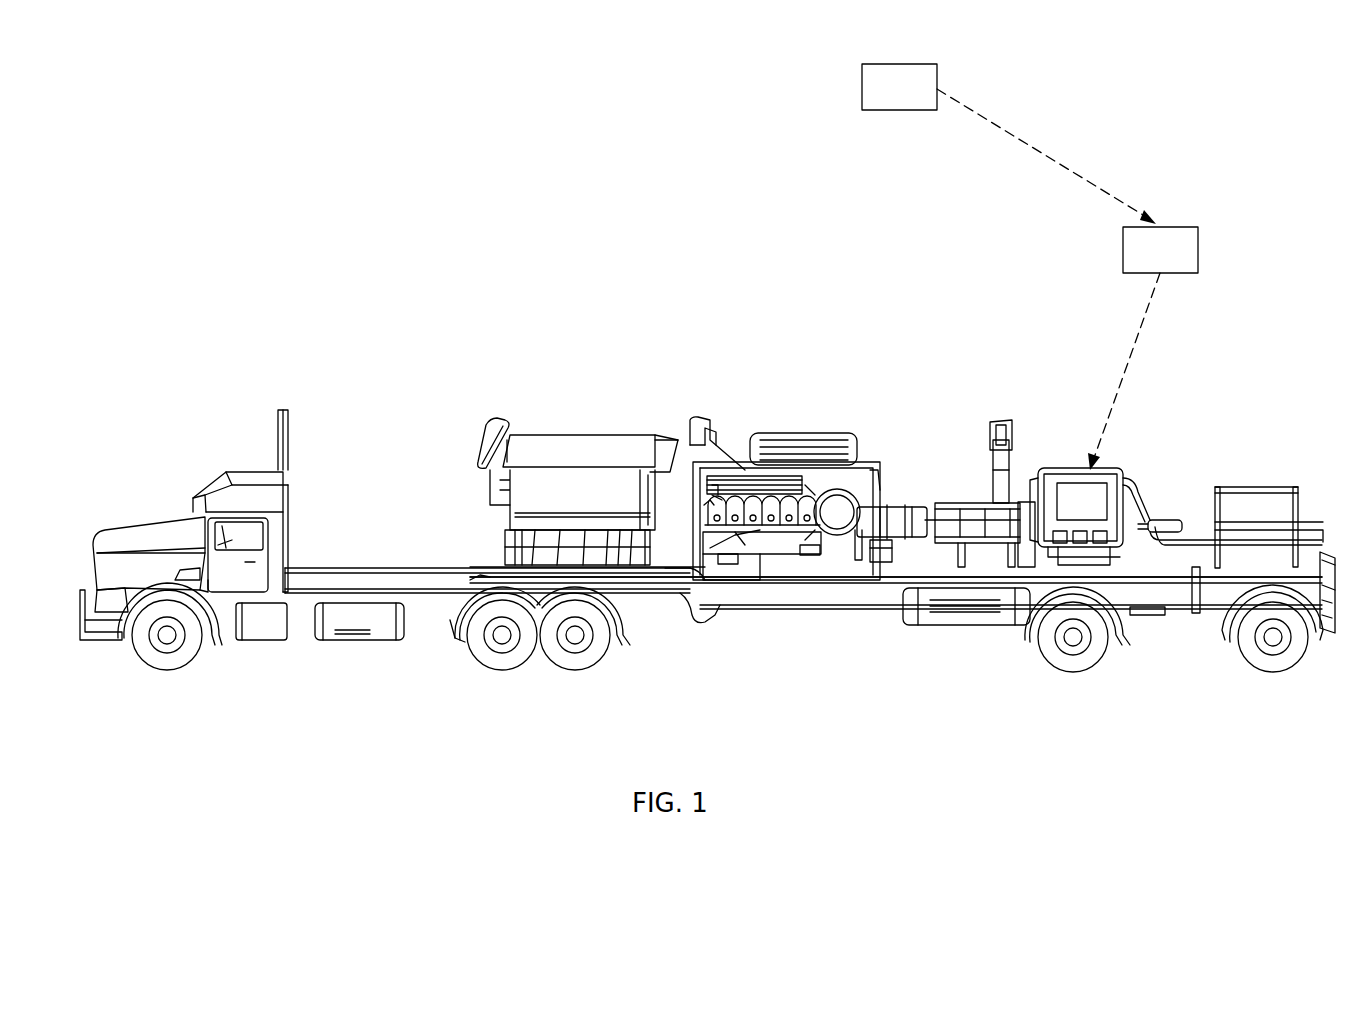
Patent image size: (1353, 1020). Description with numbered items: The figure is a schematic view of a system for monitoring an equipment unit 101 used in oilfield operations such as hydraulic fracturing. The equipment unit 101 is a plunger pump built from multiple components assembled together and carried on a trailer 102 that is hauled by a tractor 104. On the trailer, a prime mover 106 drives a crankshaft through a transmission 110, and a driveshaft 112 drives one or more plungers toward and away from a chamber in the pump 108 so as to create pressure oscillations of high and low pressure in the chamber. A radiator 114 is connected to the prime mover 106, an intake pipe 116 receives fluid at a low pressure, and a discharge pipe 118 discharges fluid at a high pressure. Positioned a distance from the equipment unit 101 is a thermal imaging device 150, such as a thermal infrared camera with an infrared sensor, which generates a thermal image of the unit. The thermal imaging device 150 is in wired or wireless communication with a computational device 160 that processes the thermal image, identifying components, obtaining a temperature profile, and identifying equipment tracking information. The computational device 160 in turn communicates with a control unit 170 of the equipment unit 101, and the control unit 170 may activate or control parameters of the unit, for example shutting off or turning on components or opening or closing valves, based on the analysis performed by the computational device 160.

The equipment unit 101 is at (1158, 405).
The trailer 102 is at (802, 605).
The tractor 104 is at (262, 470).
The prime mover 106 is at (764, 470).
The pump 108 is at (1065, 468).
The transmission 110 is at (880, 510).
The driveshaft 112 is at (975, 500).
The radiator 114 is at (589, 435).
The intake pipe 116 is at (1265, 540).
The discharge pipe 118 is at (1172, 520).
The thermal imaging device 150 is at (1009, 144).
The computational device 160 is at (1143, 348).
The control unit 170 is at (1082, 501).